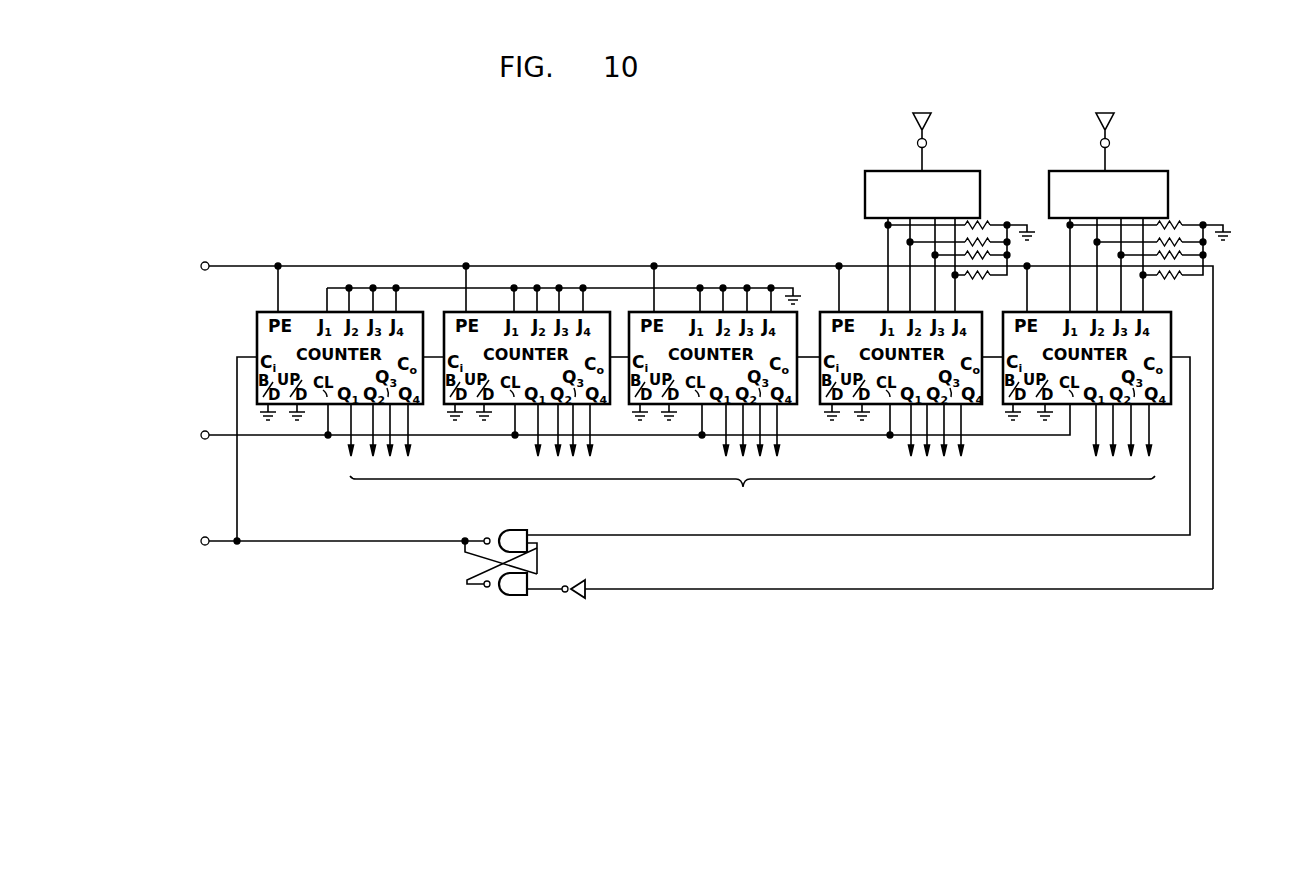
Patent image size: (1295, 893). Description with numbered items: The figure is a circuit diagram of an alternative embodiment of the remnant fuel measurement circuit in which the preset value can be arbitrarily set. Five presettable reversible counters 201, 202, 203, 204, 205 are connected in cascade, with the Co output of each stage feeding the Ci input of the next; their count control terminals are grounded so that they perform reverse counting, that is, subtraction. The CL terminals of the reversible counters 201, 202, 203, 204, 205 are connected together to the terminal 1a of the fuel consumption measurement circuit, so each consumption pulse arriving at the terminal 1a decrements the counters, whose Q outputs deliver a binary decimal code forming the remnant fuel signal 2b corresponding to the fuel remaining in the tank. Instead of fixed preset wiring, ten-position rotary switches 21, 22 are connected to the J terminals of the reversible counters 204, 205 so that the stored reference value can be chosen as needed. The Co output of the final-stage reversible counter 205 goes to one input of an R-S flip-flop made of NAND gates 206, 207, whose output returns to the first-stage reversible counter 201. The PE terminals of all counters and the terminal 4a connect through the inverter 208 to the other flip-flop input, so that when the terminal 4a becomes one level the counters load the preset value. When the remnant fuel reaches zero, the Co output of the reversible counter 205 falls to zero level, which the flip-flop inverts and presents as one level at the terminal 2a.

The terminal 4a is at (203, 262).
The terminal of the fuel consumption measurement circuit 1a is at (203, 432).
The terminal 2a is at (203, 538).
The remnant fuel signal 2b is at (752, 489).
The 10-position switch 21 is at (953, 172).
The 10-position switch 22 is at (1133, 172).
The reversible counter 201 is at (304, 310).
The reversible counter 202 is at (489, 310).
The reversible counter 203 is at (678, 310).
The reversible counter 204 is at (858, 310).
The reversible counter 205 is at (1173, 315).
The NAND gate 206 is at (511, 522).
The NAND gate 207 is at (507, 597).
The inverter 208 is at (580, 598).